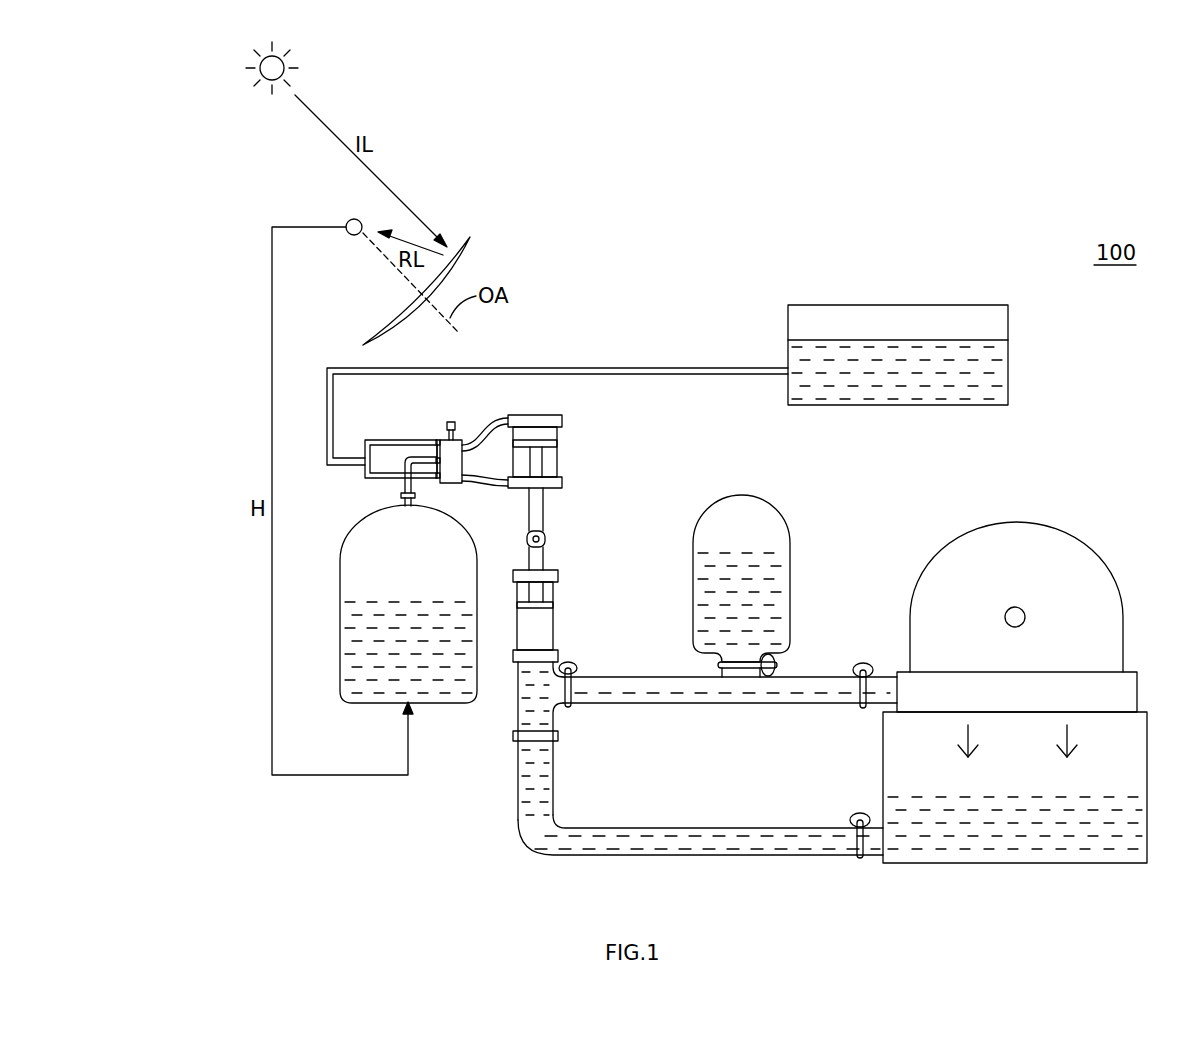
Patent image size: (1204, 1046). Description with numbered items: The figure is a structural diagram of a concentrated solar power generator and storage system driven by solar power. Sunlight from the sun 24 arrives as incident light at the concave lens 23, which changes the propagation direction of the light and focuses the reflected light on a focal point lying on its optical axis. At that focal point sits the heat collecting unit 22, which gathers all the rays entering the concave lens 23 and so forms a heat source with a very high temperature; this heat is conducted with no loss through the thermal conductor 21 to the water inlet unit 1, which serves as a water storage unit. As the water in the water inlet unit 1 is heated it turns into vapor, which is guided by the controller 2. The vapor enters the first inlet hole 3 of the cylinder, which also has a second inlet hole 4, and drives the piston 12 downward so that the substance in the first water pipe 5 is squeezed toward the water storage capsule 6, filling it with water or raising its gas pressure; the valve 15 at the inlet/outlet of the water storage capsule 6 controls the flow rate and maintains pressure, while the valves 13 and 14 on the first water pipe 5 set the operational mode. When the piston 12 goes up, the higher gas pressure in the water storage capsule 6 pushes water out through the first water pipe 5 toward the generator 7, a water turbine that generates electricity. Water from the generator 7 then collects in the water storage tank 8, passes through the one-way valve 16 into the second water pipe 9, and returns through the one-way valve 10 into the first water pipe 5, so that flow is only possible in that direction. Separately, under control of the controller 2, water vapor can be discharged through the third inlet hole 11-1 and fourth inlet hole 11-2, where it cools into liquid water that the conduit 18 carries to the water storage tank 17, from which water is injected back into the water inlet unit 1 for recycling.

The water inlet unit 1 is at (340, 650).
The controller 2 is at (452, 420).
The first inlet hole 3 is at (562, 420).
The second inlet hole 4 is at (562, 483).
The first water pipe 5 is at (655, 704).
The water storage capsule 6 is at (785, 528).
The generator 7 is at (1092, 553).
The water storage tank 8 is at (1147, 755).
The second water pipe 9 is at (655, 856).
The valve 10 is at (513, 736).
The third inlet hole 11-1 is at (388, 440).
The fourth inlet hole 11-2 is at (388, 478).
The piston 12 is at (557, 443).
The valve 13 is at (572, 662).
The valve 14 is at (864, 662).
The valve 15 is at (777, 665).
The valve 16 is at (860, 813).
The water storage tank 17 is at (1008, 375).
The conduit 18 is at (530, 368).
The thermal conductor 21 is at (272, 318).
The heat collecting unit 22 is at (347, 222).
The concave lens 23 is at (474, 243).
The sun 24 is at (268, 90).